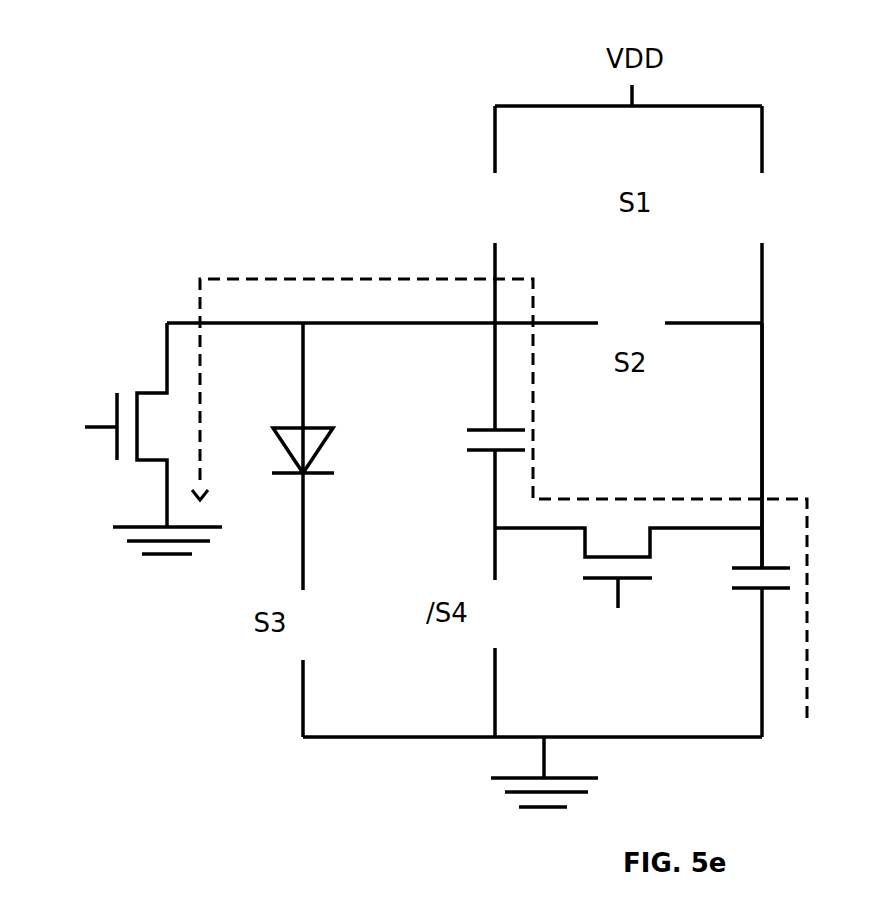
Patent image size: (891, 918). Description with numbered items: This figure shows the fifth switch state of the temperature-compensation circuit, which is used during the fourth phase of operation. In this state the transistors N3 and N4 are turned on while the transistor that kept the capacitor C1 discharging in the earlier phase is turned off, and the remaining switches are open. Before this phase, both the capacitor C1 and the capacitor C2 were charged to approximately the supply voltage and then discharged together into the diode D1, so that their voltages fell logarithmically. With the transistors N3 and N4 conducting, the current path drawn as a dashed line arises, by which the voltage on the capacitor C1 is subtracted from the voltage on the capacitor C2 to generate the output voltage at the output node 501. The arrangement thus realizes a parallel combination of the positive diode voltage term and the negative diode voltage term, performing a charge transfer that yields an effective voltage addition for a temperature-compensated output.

The output node 501 is at (762, 438).
The transistor N3 is at (140, 438).
The transistor N4 is at (628, 581).
The diode D1 is at (329, 530).
The capacitor C1 is at (482, 421).
The capacitor C2 is at (748, 603).